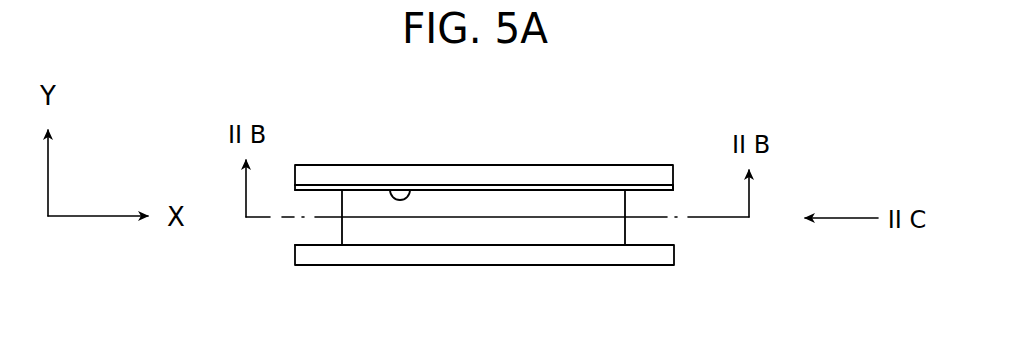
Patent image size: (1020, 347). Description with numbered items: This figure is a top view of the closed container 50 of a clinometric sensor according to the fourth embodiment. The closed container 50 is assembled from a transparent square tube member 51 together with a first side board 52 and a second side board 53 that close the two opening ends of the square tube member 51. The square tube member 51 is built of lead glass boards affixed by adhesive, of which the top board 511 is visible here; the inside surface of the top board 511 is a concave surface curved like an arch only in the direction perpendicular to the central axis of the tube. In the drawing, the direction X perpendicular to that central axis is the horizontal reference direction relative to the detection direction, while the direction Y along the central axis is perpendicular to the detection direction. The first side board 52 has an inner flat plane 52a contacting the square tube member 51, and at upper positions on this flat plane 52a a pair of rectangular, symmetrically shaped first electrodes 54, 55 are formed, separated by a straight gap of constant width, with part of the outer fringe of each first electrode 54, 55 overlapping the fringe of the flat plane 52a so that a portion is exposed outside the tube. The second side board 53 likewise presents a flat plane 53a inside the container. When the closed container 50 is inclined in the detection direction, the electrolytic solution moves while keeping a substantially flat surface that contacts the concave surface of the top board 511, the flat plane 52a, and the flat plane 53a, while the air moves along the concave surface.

The closed container 50 is at (461, 212).
The square tube member 51 is at (602, 203).
The top board 511 is at (636, 187).
The first side board 52 is at (560, 177).
The flat plane 52a is at (415, 190).
The second side board 53 is at (579, 255).
The flat plane 53a is at (310, 244).
The first electrode 54 is at (358, 187).
The first electrode 55 is at (525, 190).